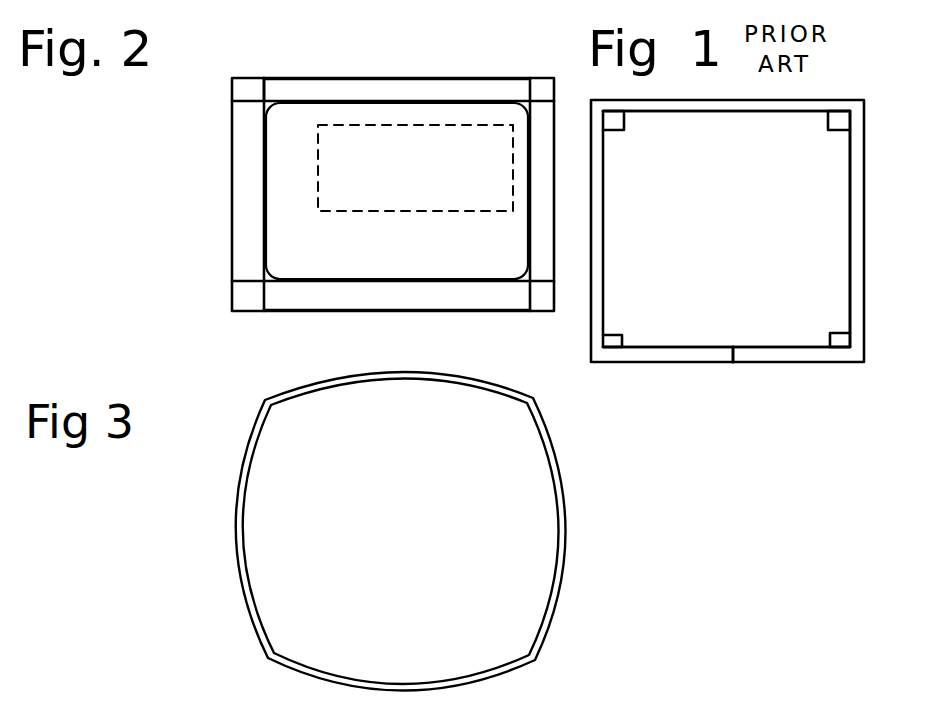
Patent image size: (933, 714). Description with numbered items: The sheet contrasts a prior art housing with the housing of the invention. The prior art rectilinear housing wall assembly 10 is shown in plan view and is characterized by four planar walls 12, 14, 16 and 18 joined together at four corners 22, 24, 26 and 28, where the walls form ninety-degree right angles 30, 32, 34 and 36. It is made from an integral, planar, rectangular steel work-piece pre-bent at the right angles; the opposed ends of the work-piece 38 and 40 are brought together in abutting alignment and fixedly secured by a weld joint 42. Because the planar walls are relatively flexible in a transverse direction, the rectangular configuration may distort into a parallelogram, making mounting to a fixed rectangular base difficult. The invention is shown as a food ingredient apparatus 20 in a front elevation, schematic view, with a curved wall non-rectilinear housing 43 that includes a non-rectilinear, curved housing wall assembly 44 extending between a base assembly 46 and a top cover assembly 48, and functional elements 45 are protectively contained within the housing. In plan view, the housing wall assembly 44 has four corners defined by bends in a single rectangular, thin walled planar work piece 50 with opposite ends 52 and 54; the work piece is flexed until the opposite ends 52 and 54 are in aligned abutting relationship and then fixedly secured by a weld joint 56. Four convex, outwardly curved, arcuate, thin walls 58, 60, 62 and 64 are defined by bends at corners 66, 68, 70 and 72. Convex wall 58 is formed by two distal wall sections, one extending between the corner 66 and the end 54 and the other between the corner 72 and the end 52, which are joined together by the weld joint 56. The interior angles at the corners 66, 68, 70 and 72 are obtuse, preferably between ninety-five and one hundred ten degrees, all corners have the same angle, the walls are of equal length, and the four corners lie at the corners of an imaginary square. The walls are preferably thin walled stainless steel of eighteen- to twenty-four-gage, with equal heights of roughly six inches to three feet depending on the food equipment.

In FIG. 1, the rectilinear housing wall assembly 10 is at (723, 213).
In FIG. 1, the planar wall 12 is at (602, 212).
In FIG. 1, the planar wall 14 is at (848, 195).
In FIG. 1, the planar wall 16 is at (735, 110).
In FIG. 1, the planar wall 18 is at (683, 345).
In FIG. 2, the food ingredient apparatus 20 is at (226, 160).
In FIG. 1, the corner 22 is at (592, 90).
In FIG. 1, the corner 24 is at (858, 95).
In FIG. 1, the corner 26 is at (852, 362).
In FIG. 1, the corner 28 is at (596, 366).
In FIG. 1, the 90-degree right angle 30 is at (616, 131).
In FIG. 1, the 90-degree right angle 32 is at (835, 130).
In FIG. 1, the 90-degree right angle 34 is at (838, 330).
In FIG. 1, the 90-degree right angle 36 is at (615, 334).
In FIG. 1, the opposed end of work-piece 38 is at (748, 352).
In FIG. 1, the opposed end of work-piece 40 is at (720, 350).
In FIG. 1, the weld joint 42 is at (732, 362).
In FIG. 2, the curved wall non-rectilinear housing 43 is at (280, 115).
In FIG. 2, the non-rectilinear curved housing wall assembly 44 is at (303, 224).
In FIG. 3, the non-rectilinear curved housing wall assembly 44 is at (396, 506).
In FIG. 2, the functional elements 45 is at (438, 115).
In FIG. 2, the base assembly 46 is at (378, 86).
In FIG. 2, the top cover assembly 48 is at (398, 308).
In FIG. 3, the thin walled planar work piece 50 is at (569, 504).
In FIG. 3, the opposite end of work piece 52 is at (352, 355).
In FIG. 3, the opposite end of work piece 54 is at (416, 373).
In FIG. 3, the weld joint 56 is at (412, 372).
In FIG. 3, the convex wall 58 is at (312, 380).
In FIG. 3, the convex wall 60 is at (237, 542).
In FIG. 3, the convex wall 62 is at (414, 690).
In FIG. 3, the convex wall 64 is at (566, 568).
In FIG. 3, the corner 66 is at (262, 400).
In FIG. 3, the corner 68 is at (268, 658).
In FIG. 3, the corner 70 is at (537, 661).
In FIG. 3, the corner 72 is at (534, 398).